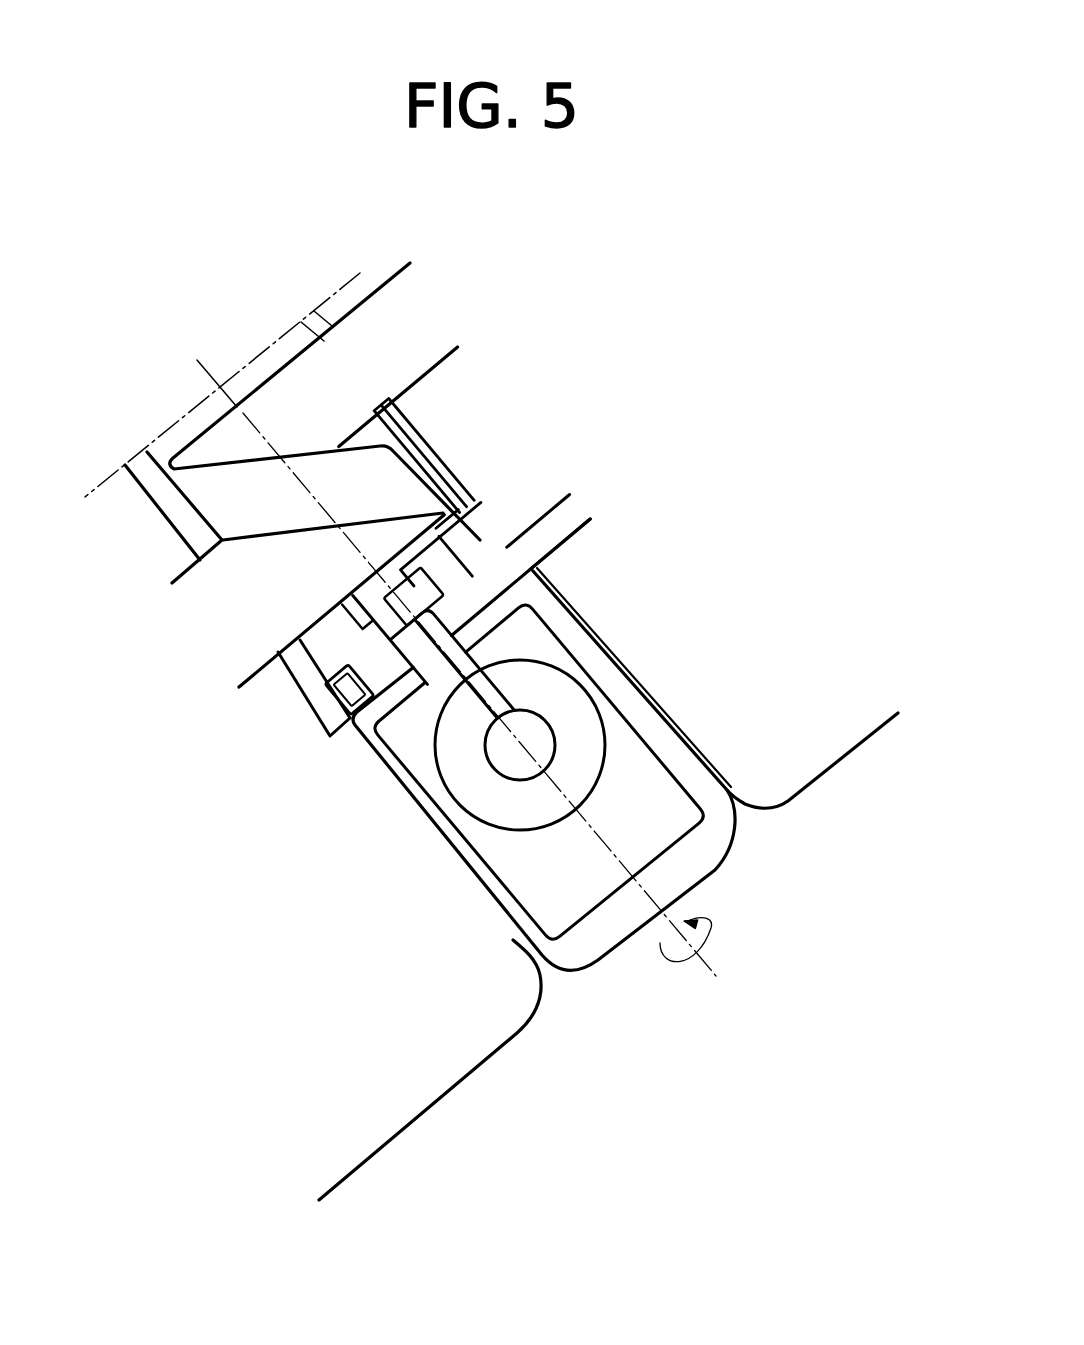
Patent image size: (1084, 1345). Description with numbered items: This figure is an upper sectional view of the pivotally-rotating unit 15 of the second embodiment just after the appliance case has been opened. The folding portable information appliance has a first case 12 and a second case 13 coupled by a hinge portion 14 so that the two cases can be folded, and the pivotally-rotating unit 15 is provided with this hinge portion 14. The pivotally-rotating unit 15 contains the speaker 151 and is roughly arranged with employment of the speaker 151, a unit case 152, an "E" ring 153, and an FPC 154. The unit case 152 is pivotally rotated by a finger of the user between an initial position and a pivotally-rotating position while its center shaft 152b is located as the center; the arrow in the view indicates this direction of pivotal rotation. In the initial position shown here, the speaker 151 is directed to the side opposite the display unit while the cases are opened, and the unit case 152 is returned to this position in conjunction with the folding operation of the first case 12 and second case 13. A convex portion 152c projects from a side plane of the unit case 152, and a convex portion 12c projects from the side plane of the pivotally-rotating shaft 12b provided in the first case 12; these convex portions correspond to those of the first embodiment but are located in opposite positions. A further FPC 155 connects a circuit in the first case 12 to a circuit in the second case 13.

The first case 12 is at (824, 745).
The pivotally-rotating shaft 12b is at (165, 520).
The convex portion 12c is at (520, 550).
The second case 13 is at (406, 1102).
The hinge portion 14 is at (642, 950).
The pivotally-rotating unit 15 is at (728, 858).
The speaker 151 is at (476, 795).
The unit case 152 is at (577, 955).
The center shaft 152b is at (401, 574).
The convex portion 152c is at (348, 698).
The E ring 153 is at (426, 574).
The FPC 154 is at (388, 660).
The FPC 155 is at (279, 541).